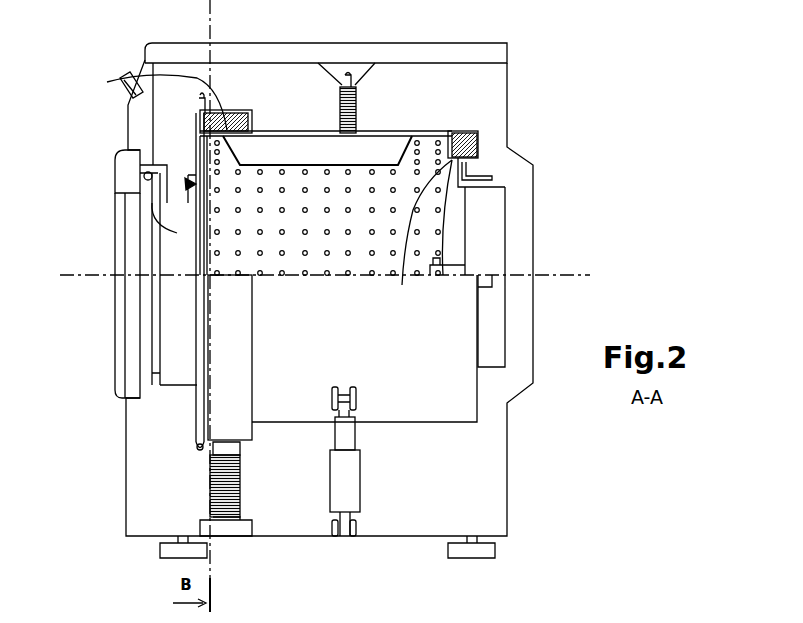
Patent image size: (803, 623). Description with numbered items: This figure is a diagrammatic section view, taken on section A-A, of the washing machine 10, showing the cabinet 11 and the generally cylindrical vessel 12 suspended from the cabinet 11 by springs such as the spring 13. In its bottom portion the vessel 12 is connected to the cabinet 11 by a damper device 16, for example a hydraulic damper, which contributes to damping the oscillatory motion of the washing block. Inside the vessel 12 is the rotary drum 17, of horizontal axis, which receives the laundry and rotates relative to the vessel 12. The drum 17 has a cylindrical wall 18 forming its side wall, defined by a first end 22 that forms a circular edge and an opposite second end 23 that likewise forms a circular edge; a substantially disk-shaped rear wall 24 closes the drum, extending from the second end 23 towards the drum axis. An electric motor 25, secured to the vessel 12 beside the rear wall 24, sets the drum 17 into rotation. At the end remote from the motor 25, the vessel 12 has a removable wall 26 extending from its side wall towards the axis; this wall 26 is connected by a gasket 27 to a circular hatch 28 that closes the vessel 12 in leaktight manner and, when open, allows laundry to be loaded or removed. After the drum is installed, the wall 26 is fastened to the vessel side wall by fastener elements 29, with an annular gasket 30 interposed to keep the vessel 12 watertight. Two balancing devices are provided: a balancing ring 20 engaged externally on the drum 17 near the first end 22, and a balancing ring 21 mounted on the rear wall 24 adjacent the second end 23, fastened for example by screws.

The washing machine 10 is at (545, 73).
The cabinet 11 is at (535, 181).
The vessel 12 is at (430, 423).
The spring 13 is at (340, 118).
The damper device 16 is at (360, 483).
The rotary drum 17 is at (137, 200).
The cylindrical wall 18 is at (372, 131).
The balancing ring 20 is at (120, 82).
The balancing ring 21 is at (467, 130).
The first end 22 is at (200, 130).
The second end 23 is at (448, 133).
The rear wall 24 is at (340, 225).
The electric motor 25 is at (505, 226).
The wall 26 is at (195, 402).
The gasket 27 is at (170, 387).
The circular hatch 28 is at (137, 235).
The fastener element 29 is at (200, 448).
The annular gasket 30 is at (197, 427).